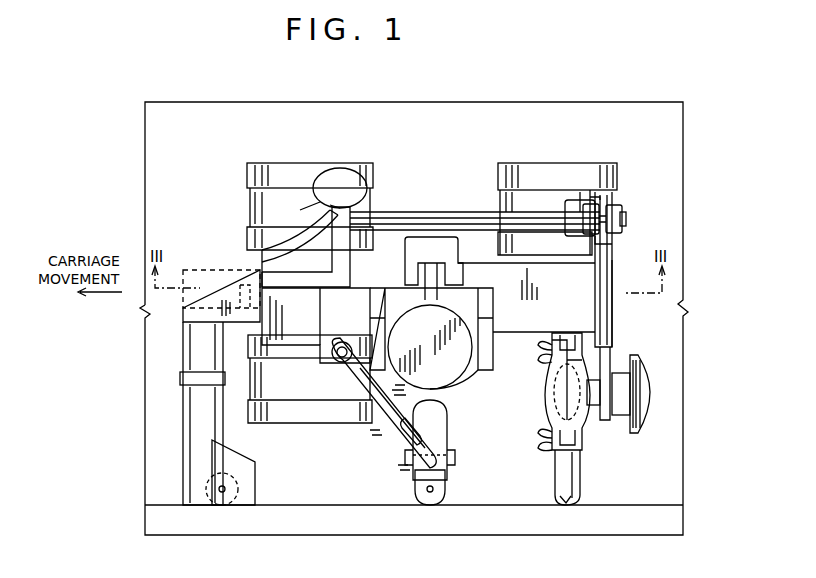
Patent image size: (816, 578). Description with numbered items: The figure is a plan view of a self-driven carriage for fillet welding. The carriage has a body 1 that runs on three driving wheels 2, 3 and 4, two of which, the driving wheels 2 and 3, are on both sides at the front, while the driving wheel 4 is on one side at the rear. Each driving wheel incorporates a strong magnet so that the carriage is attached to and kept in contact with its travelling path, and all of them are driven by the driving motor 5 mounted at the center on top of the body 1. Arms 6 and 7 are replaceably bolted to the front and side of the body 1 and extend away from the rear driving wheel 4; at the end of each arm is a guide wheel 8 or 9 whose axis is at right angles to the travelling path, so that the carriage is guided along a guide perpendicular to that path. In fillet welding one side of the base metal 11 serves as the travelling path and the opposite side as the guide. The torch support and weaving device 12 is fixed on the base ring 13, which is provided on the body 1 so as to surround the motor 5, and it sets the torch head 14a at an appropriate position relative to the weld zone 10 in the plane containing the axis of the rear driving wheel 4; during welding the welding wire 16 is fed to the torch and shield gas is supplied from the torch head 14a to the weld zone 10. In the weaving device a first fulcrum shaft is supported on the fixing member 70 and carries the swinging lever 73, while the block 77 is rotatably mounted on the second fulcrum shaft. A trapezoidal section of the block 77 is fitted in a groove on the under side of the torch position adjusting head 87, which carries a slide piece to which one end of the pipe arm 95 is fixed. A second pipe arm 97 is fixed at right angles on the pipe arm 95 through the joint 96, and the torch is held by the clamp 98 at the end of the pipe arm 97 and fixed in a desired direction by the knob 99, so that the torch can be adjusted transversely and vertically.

The body 1 is at (508, 335).
The driving wheel 2 is at (290, 163).
The driving wheel 3 is at (278, 423).
The driving wheel 4 is at (528, 163).
The driving motor 5 is at (452, 375).
The arm 6 is at (183, 440).
The arm 7 is at (410, 472).
The guide wheel 8 is at (218, 500).
The guide wheel 9 is at (427, 505).
The weld zone 10 is at (652, 505).
The base metal 11 is at (684, 158).
The torch support and weaving device 12 is at (622, 335).
The base ring 13 is at (426, 242).
The torch head 14a is at (580, 463).
The welding wire 16 is at (570, 499).
The fixing member 70 is at (340, 362).
The swinging lever 73 is at (380, 425).
The block 77 is at (300, 312).
The torch position adjusting head 87 is at (262, 260).
The pipe arm 95 is at (392, 212).
The joint 96 is at (612, 208).
The pipe arm 97 is at (613, 283).
The clamp 98 is at (584, 425).
The knob 99 is at (660, 385).